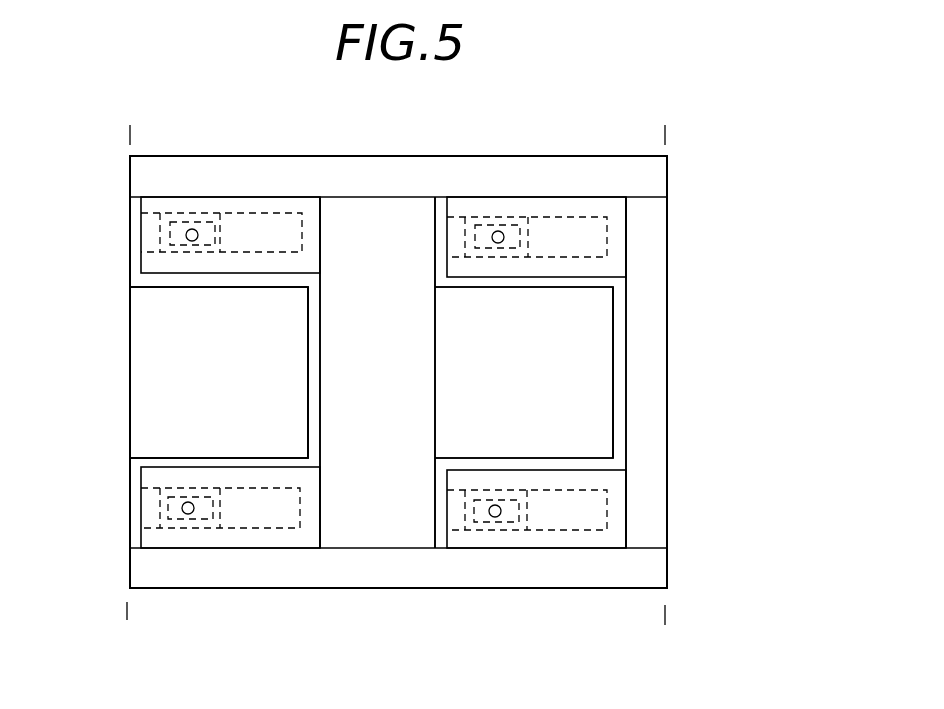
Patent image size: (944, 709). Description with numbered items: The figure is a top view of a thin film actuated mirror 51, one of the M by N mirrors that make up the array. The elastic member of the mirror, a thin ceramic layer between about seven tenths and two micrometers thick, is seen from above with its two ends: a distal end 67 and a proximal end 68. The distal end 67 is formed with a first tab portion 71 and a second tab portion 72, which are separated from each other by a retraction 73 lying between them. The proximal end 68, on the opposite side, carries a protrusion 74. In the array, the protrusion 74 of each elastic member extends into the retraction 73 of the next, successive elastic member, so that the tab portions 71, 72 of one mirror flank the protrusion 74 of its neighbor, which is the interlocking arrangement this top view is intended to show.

The thin film actuated mirror 51 is at (553, 112).
The distal end 67 is at (193, 325).
The proximal end 68 is at (483, 382).
The first tab portion 71 is at (250, 205).
The second tab portion 72 is at (252, 537).
The retraction 73 is at (310, 287).
The protrusion 74 is at (547, 357).